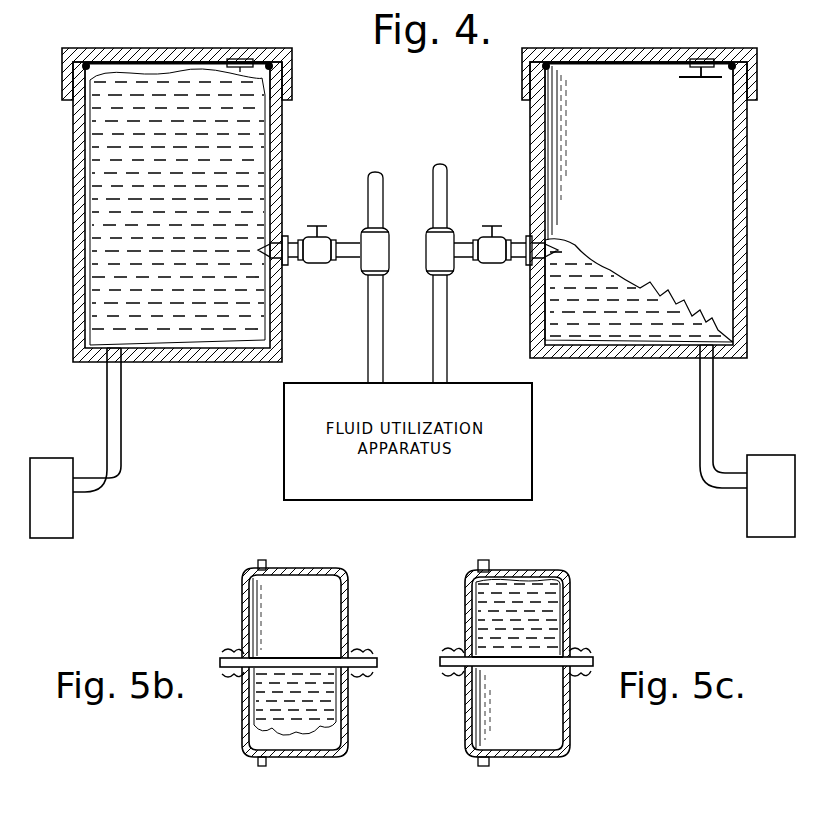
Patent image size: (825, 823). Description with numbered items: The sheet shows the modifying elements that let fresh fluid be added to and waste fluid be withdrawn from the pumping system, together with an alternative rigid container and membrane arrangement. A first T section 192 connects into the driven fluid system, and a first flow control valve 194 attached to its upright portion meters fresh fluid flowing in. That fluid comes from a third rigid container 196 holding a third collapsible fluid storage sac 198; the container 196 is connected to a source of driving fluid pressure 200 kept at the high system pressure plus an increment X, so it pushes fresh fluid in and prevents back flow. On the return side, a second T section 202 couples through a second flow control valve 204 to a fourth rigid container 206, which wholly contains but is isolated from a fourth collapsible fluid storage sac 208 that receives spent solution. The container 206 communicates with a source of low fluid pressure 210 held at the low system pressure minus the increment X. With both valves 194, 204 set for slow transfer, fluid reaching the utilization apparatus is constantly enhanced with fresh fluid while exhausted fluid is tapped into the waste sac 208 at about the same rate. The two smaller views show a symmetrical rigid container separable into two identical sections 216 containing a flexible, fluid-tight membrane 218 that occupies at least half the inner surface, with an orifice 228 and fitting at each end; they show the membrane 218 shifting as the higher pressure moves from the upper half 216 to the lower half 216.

In FIG. 4, the first T section 192 is at (389, 268).
In FIG. 4, the first flow control valve 194 is at (318, 263).
In FIG. 4, the third rigid container 196 is at (282, 130).
In FIG. 4, the third collapsible fluid storage sac 198 is at (90, 158).
In FIG. 4, the source of driving fluid pressure 200 is at (73, 523).
In FIG. 4, the second T section 202 is at (455, 276).
In FIG. 4, the second flow control valve 204 is at (495, 240).
In FIG. 4, the fourth rigid container 206 is at (530, 122).
In FIG. 4, the fourth collapsible fluid storage sac 208 is at (630, 292).
In FIG. 4, the source of low fluid pressure 210 is at (747, 525).
In FIG. 5B, the container section 216 is at (243, 626).
In FIG. 5C, the container section 216 is at (570, 633).
In FIG. 5B, the flexible membrane 218 is at (348, 718).
In FIG. 5C, the flexible membrane 218 is at (478, 618).
In FIG. 5B, the orifice 228 is at (257, 566).
In FIG. 5C, the orifice 228 is at (478, 567).